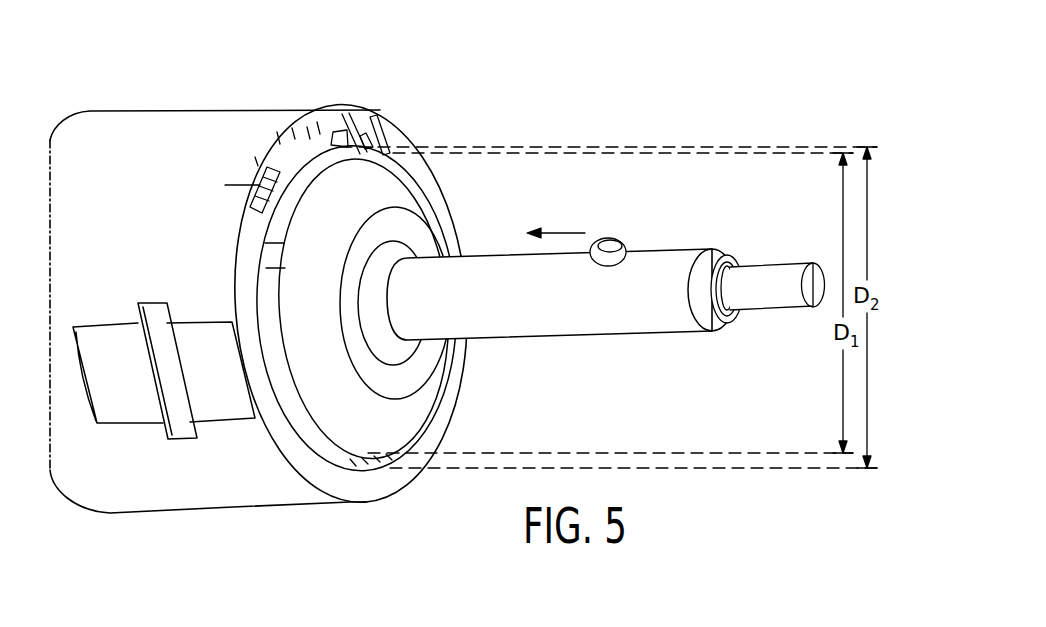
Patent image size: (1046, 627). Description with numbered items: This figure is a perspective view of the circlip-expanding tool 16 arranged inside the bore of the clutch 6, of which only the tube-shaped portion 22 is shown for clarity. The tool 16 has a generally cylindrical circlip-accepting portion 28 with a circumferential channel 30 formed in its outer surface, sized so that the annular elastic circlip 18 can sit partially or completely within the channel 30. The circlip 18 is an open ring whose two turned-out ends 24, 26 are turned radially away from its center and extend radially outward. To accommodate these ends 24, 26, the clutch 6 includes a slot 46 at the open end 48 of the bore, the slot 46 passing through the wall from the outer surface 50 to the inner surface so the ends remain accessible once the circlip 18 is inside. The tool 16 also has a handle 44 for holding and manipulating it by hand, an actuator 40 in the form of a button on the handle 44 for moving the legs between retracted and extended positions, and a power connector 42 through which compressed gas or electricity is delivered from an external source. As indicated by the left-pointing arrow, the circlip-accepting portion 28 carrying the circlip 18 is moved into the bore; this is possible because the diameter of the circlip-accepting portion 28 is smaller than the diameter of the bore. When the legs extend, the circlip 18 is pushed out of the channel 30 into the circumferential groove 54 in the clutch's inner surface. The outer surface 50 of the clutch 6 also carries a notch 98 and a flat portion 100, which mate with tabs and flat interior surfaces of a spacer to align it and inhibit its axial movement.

The clutch 6 is at (215, 326).
The tube-shaped portion 22 is at (230, 493).
The circlip-expanding tool 16 is at (607, 298).
The circlip 18 is at (256, 198).
The turned-out end 24 is at (225, 185).
The turned-out end 26 is at (377, 128).
The circlip-accepting portion 28 is at (400, 195).
The circumferential channel 30 is at (315, 138).
The actuator 40 is at (608, 238).
The power connector 42 is at (818, 287).
The handle 44 is at (570, 325).
The slot 46 is at (288, 131).
The open end 48 is at (363, 466).
The outer surface 50 is at (215, 311).
The circumferential groove 54 is at (380, 117).
The notch 98 is at (173, 402).
The flat portion 100 is at (164, 396).